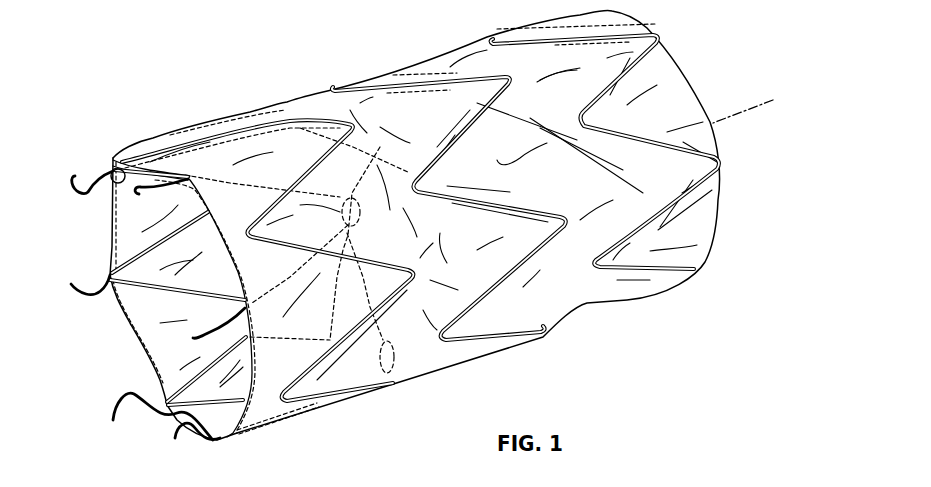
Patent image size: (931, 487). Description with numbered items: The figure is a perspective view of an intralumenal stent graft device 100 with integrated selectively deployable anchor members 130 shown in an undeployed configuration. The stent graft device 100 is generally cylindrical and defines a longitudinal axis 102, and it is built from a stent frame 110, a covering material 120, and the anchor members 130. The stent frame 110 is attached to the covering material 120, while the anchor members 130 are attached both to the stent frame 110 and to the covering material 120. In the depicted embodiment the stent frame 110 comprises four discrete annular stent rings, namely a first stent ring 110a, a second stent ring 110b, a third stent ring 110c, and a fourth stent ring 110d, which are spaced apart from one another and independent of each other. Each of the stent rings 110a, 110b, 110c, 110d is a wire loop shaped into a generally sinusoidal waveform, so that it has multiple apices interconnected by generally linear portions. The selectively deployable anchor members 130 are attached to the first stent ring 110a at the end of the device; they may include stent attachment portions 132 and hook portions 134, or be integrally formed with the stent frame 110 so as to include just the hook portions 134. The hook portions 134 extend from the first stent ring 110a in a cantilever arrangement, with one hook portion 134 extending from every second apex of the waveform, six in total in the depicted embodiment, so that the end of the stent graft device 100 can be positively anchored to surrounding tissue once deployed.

The stent graft device 100 is at (126, 50).
The longitudinal axis 102 is at (773, 100).
The stent frame 110 is at (304, 112).
The first stent ring 110a is at (288, 424).
The second stent ring 110b is at (393, 290).
The third stent ring 110c is at (547, 228).
The fourth stent ring 110d is at (663, 204).
The covering material 120 is at (668, 87).
The selectively deployable anchor members 130 is at (95, 268).
The stent attachment portions 132 is at (106, 174).
The hook portions 134 is at (93, 197).